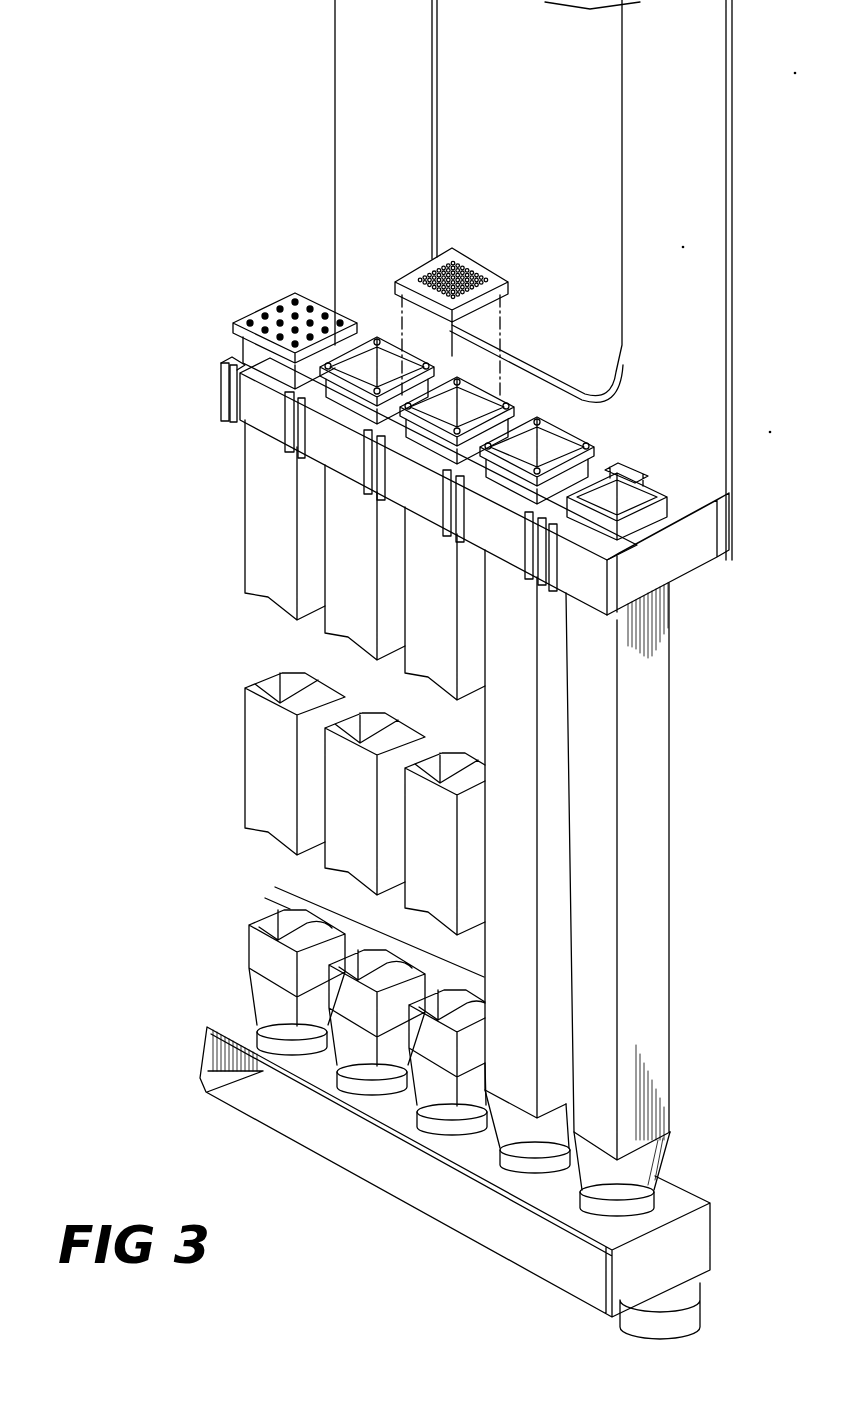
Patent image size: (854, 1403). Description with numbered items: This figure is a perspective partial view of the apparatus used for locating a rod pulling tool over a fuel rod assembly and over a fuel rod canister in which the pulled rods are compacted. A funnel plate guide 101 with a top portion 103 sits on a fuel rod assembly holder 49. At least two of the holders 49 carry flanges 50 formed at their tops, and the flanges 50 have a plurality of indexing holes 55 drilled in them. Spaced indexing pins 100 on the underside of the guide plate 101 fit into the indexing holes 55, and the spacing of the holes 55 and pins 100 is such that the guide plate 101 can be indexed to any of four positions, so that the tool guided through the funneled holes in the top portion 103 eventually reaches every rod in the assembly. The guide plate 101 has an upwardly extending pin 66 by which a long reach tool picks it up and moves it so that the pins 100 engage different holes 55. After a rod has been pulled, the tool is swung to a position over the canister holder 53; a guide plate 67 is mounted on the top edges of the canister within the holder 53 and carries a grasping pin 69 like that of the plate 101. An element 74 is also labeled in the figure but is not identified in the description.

The fuel rod assembly holder 49 is at (358, 410).
The flange 50 is at (499, 393).
The canister holder 53 is at (250, 551).
The indexing hole 55 is at (376, 338).
The upwardly extending pin 66 is at (443, 262).
The guide plate 67 is at (233, 325).
The grasping pin 69 is at (293, 318).
The base 74 is at (420, 945).
The indexing pin 100 is at (490, 348).
The funnel plate guide 101 is at (475, 262).
The top portion 103 is at (492, 280).